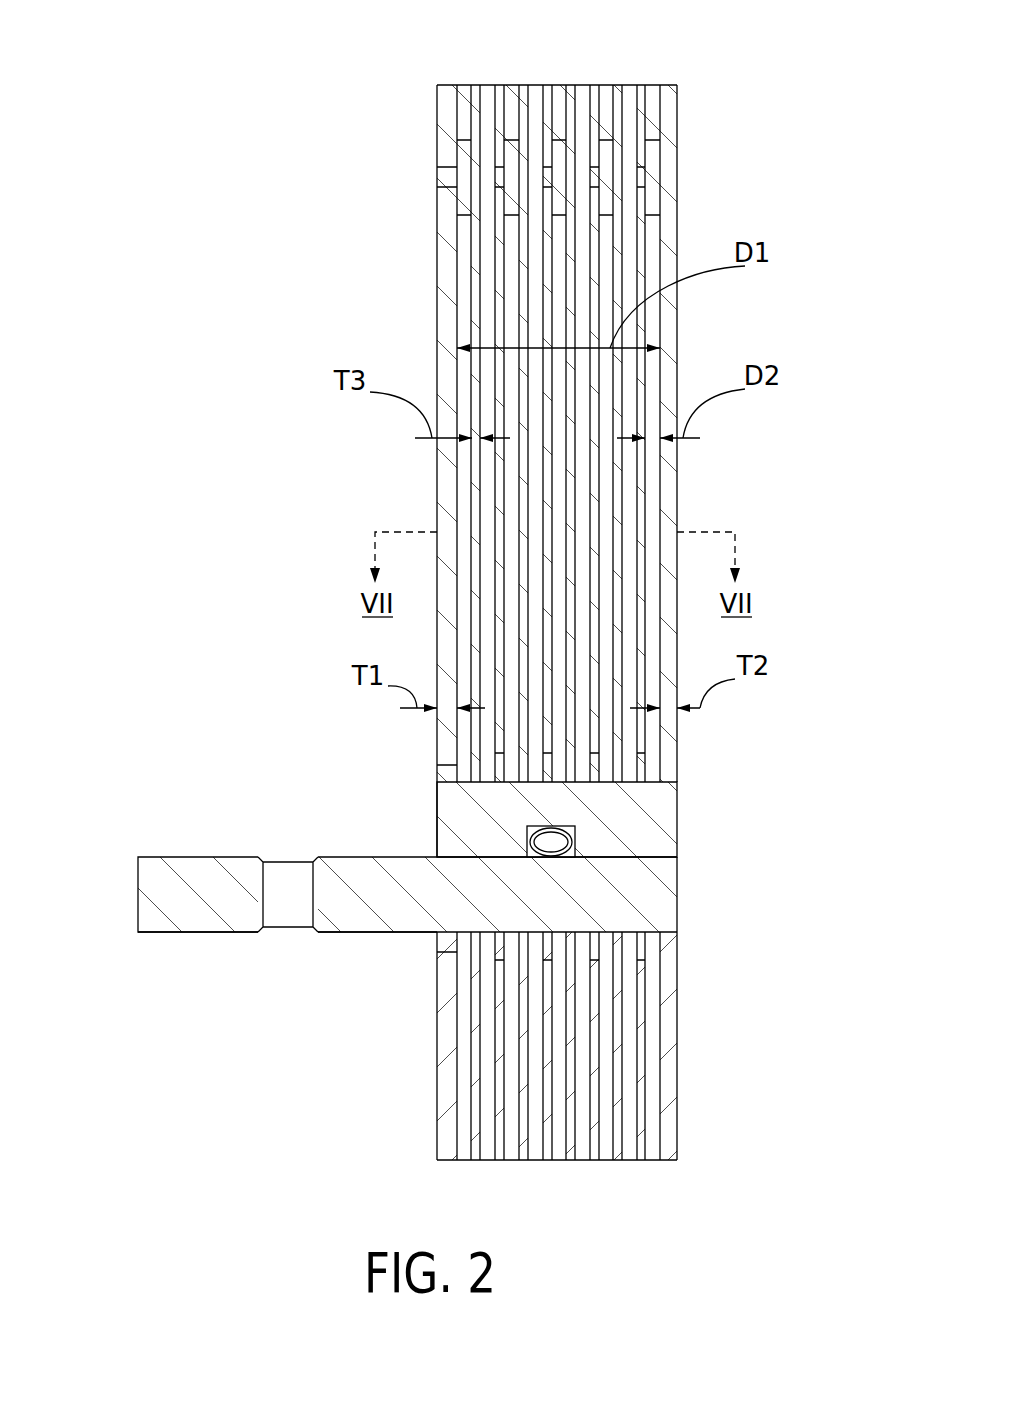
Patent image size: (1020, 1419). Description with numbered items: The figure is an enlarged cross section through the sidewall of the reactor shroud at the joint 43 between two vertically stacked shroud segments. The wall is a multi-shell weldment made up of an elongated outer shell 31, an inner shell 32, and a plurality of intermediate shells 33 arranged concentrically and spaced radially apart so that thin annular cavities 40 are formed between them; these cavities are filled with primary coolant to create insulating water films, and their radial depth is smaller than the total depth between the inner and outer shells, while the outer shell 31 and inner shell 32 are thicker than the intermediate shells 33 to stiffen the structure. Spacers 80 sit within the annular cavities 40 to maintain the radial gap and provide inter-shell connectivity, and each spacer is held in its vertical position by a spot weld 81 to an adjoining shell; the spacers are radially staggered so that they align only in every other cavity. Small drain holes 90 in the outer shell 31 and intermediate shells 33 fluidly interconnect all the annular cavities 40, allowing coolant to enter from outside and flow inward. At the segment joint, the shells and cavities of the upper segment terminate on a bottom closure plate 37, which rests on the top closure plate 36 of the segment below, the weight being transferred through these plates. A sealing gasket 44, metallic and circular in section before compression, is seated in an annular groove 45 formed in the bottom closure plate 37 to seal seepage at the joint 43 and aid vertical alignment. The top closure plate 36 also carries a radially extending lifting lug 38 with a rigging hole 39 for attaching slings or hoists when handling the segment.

The outer shell 31 is at (437, 1102).
The inner shell 32 is at (680, 1072).
The intermediate shells 33 is at (467, 1163).
The top closure plate 36 is at (178, 946).
The bottom closure plate 37 is at (437, 845).
The lifting lug 38 is at (173, 863).
The rigging hole 39 is at (293, 912).
The annular cavities 40 is at (490, 292).
The joint 43 is at (617, 857).
The sealing gasket 44 is at (550, 842).
The annular groove 45 is at (573, 830).
The spacers 80 is at (512, 158).
The spot weld 81 is at (499, 178).
The drain holes 90 is at (500, 773).